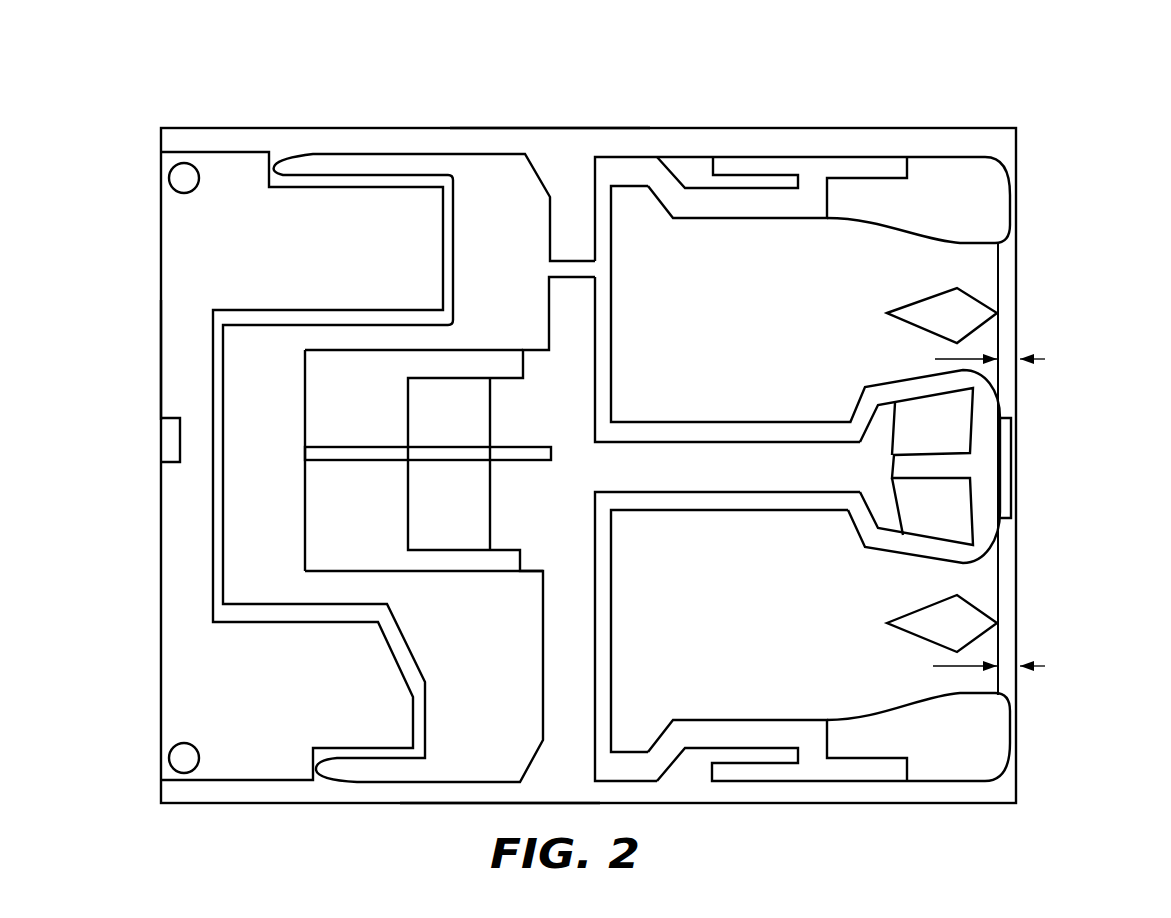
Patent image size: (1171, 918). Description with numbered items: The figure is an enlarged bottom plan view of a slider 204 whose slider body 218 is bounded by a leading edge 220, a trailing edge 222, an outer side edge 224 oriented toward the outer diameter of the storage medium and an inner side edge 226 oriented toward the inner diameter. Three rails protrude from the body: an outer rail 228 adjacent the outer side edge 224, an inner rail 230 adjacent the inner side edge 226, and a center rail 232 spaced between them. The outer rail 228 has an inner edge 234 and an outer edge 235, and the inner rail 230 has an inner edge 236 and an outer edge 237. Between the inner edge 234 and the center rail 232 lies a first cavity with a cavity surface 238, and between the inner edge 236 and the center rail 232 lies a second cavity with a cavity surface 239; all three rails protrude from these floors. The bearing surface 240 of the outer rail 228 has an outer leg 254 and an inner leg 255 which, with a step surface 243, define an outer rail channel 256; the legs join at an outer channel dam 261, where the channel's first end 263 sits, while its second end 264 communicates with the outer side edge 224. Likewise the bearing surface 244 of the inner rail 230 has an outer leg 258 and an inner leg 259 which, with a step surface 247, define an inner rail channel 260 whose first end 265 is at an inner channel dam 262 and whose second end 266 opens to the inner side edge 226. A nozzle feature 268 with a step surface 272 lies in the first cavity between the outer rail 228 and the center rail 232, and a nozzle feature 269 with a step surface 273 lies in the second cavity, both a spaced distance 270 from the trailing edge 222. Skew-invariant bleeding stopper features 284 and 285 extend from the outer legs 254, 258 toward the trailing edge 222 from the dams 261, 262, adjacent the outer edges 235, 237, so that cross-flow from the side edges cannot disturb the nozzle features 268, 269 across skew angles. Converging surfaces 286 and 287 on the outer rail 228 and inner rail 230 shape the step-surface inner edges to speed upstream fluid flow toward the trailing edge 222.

The slider 204 is at (1016, 93).
The slider body 218 is at (158, 560).
The leading edge 220 is at (160, 375).
The trailing edge 222 is at (1018, 490).
The outer side edge 224 is at (560, 128).
The inner side edge 226 is at (470, 805).
The outer rail 228 is at (843, 224).
The inner rail 230 is at (864, 712).
The center rail 232 is at (853, 518).
The inner edge 234 is at (803, 218).
The outer edge 235 is at (825, 157).
The inner edge 236 is at (757, 718).
The outer edge 237 is at (838, 782).
The cavity surface 238 is at (751, 299).
The cavity surface 239 is at (727, 636).
The bearing surface 240 is at (803, 204).
The step surface 243 is at (695, 169).
The bearing surface 244 is at (805, 736).
The step surface 247 is at (690, 771).
The outer leg 254 is at (772, 162).
The inner leg 255 is at (735, 210).
The outer rail channel 256 is at (733, 183).
The outer leg 258 is at (786, 775).
The inner leg 259 is at (722, 730).
The inner rail channel 260 is at (735, 755).
The outer channel dam 261 is at (800, 188).
The inner channel dam 262 is at (798, 763).
The first end 263 is at (798, 183).
The second end 264 is at (680, 155).
The first end 265 is at (797, 752).
The second end 266 is at (690, 784).
The nozzle feature 268 is at (922, 333).
The nozzle feature 269 is at (920, 642).
The spaced distance 270 is at (1045, 359).
The step surface 272 is at (942, 315).
The step surface 273 is at (942, 623).
The skew-invariant bleeding stopper feature 284 is at (885, 163).
The skew-invariant bleeding stopper feature 285 is at (887, 770).
The converging surface 286 is at (917, 233).
The converging surface 287 is at (933, 697).